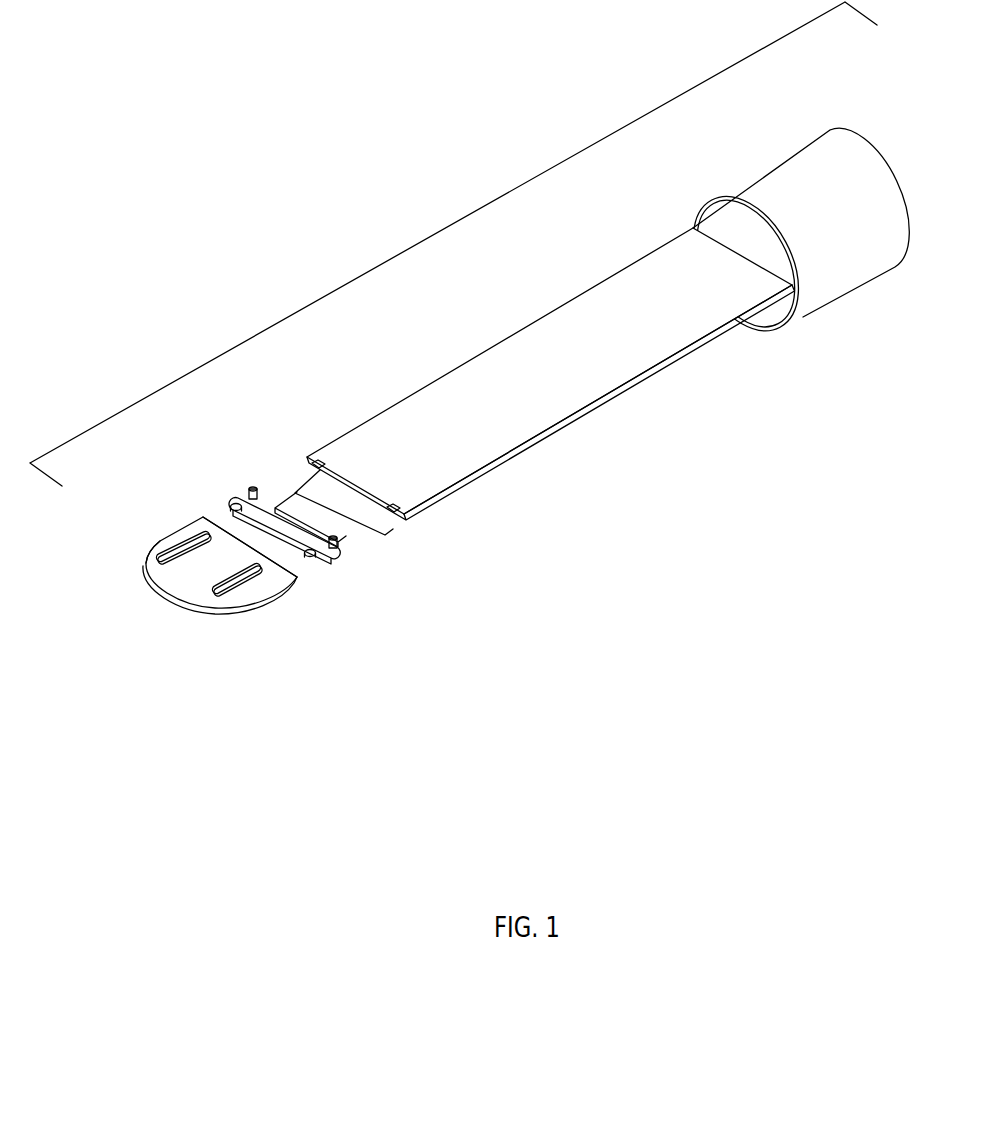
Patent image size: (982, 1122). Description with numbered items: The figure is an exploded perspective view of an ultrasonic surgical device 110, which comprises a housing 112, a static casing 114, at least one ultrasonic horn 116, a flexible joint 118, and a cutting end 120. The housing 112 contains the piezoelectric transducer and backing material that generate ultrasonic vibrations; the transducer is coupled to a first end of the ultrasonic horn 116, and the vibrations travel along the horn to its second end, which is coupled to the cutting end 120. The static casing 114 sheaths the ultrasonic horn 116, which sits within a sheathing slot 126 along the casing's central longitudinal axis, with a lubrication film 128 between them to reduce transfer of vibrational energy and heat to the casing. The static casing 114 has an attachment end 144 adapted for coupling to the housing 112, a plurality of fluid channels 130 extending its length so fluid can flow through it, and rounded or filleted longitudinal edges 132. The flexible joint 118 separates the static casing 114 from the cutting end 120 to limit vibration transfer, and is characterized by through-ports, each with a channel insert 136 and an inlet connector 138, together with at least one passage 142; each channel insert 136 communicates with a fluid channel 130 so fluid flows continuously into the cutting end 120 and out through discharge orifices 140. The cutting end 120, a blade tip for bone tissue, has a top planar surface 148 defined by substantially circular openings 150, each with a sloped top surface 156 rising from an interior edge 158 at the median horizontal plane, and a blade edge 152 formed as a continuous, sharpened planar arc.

The ultrasonic surgical device 110 is at (425, 196).
The housing 112 is at (800, 177).
The static casing 114 is at (418, 428).
The ultrasonic horn 116 is at (325, 522).
The flexible joint 118 is at (347, 567).
The cutting end 120 is at (208, 588).
The sheathing slot 126 is at (335, 462).
The lubrication film 128 is at (313, 490).
The fluid channels 130 is at (405, 517).
The longitudinal edges 132 is at (598, 398).
The channel insert 136 is at (253, 495).
The inlet connector 138 is at (235, 503).
The discharge orifices 140 is at (203, 545).
The passage 142 is at (310, 555).
The attachment end 144 is at (773, 313).
The top planar surface 148 is at (188, 585).
The openings 150 is at (248, 577).
The blade edge 152 is at (157, 597).
The sloped top surface 156 is at (178, 552).
The interior edge 158 is at (232, 585).